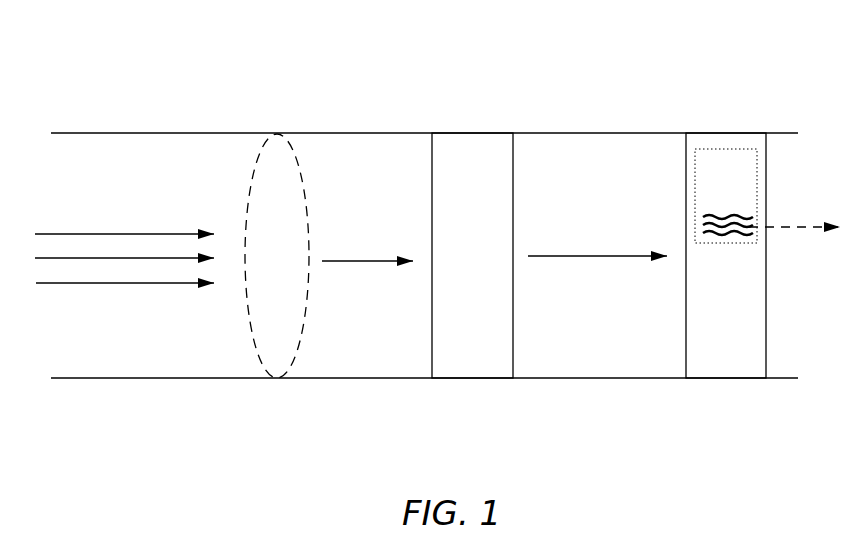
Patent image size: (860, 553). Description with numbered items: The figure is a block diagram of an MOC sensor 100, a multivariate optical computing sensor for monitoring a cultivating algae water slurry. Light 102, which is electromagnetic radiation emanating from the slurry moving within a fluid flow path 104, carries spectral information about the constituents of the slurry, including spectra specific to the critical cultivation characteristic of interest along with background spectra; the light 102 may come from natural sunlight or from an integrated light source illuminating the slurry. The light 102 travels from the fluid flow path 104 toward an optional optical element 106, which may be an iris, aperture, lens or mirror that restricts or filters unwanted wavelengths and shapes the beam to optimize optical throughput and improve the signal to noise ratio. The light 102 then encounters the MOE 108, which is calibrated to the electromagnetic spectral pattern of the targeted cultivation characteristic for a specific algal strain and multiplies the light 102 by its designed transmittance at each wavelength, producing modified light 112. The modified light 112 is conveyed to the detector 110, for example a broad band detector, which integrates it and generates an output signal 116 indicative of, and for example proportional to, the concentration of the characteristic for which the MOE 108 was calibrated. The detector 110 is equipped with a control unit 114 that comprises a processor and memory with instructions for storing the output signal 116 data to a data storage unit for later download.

The MOC sensor 100 is at (558, 76).
The light 102 is at (152, 233).
The fluid flow path 104 is at (180, 343).
The optical element 106 is at (277, 256).
The MOE 108 is at (472, 255).
The detector 110 is at (726, 255).
The modified light 112 is at (578, 255).
The control unit 114 is at (726, 196).
The output signal 116 is at (740, 221).